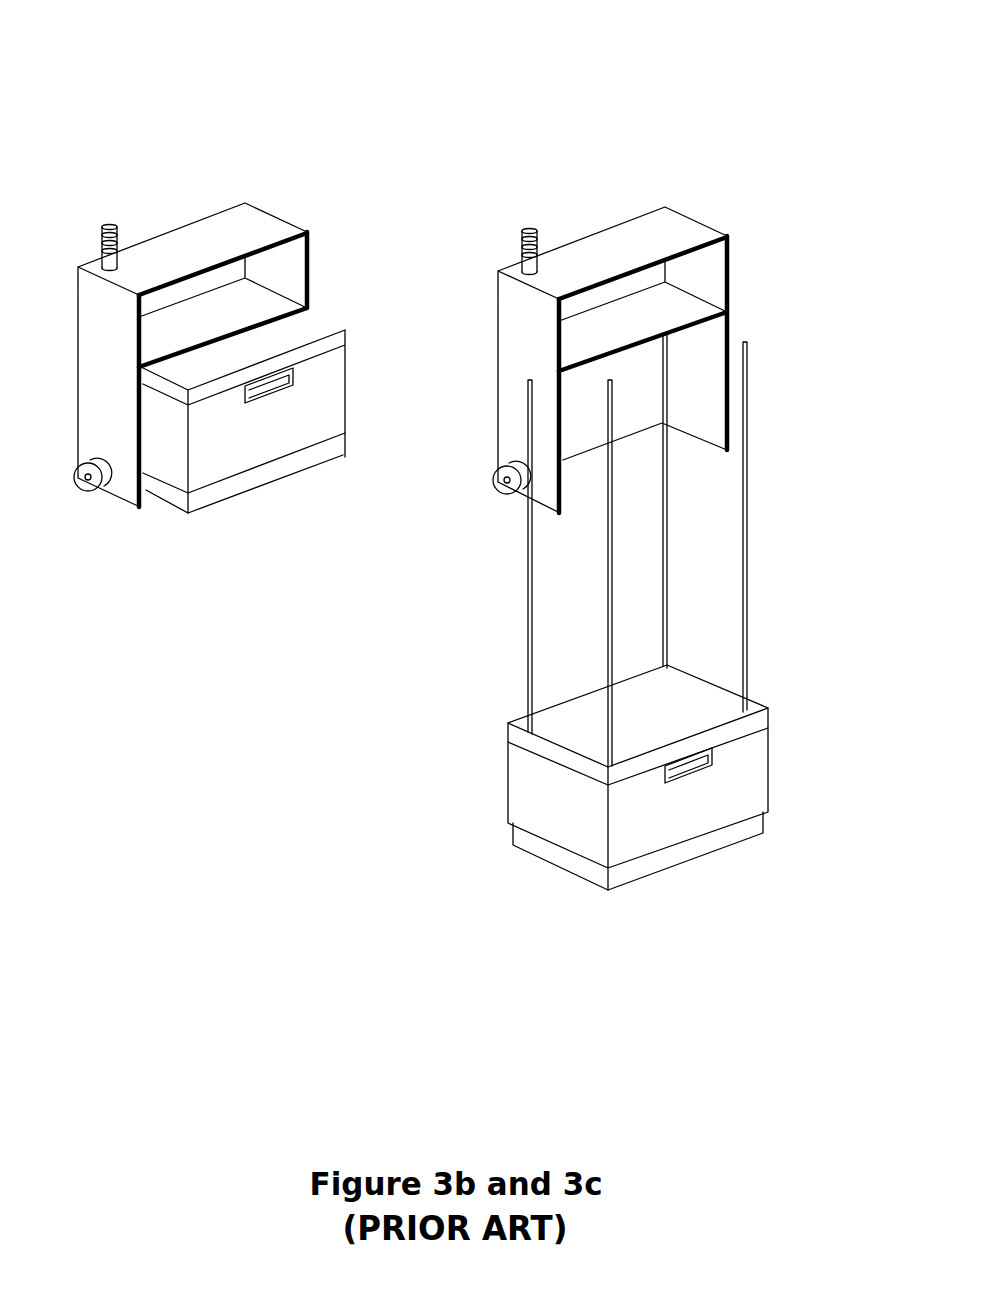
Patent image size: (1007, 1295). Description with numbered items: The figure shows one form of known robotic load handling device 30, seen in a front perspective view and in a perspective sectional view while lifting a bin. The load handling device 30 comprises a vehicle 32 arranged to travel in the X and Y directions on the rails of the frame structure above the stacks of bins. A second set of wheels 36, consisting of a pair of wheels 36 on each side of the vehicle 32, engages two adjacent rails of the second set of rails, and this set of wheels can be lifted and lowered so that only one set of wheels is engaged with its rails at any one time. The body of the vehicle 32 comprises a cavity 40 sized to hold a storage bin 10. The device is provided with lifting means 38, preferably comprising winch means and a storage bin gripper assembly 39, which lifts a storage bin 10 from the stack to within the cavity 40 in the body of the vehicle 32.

In FIG. 3B, the storage bin 10 is at (230, 435).
In FIG. 3C, the storage bin 10 is at (703, 810).
In FIG. 3B, the robotic load handling device 30 is at (264, 146).
In FIG. 3C, the robotic load handling device 30 is at (672, 143).
In FIG. 3C, the vehicle 32 is at (677, 230).
In FIG. 3B, the second set of wheels 36 is at (92, 490).
In FIG. 3C, the second set of wheels 36 is at (502, 493).
In FIG. 3C, the lifting means 38 is at (530, 660).
In FIG. 3C, the gripper assembly 39 is at (702, 700).
In FIG. 3C, the cavity 40 is at (600, 382).